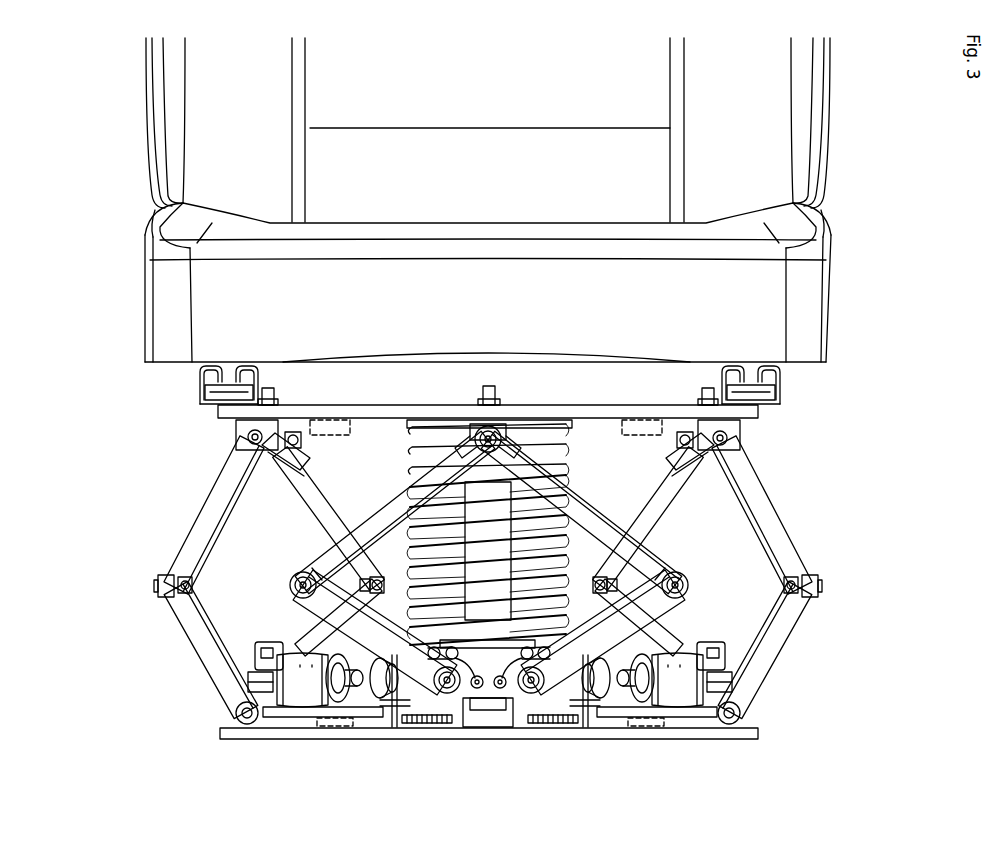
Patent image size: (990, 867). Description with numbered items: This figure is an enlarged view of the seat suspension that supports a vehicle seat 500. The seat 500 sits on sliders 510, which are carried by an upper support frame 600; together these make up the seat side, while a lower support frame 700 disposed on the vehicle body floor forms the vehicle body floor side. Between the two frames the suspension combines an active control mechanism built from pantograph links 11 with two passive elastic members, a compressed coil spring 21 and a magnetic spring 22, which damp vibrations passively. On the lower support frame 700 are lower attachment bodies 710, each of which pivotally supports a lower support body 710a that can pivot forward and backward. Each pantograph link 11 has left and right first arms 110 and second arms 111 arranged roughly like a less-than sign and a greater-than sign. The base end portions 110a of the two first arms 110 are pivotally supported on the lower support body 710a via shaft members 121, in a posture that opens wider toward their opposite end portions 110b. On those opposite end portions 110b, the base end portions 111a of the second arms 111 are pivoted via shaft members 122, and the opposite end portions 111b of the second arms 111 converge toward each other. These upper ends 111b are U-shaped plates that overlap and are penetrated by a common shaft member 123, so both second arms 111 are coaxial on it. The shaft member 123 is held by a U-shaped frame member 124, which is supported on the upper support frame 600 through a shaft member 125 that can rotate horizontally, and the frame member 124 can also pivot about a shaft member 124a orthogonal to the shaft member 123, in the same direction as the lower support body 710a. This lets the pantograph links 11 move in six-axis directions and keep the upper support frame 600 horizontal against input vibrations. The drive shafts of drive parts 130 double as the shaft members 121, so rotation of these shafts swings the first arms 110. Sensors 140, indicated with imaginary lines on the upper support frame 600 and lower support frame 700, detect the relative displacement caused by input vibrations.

The seat 500 is at (832, 90).
The sliders 510 is at (197, 392).
The upper support frame 600 is at (610, 410).
The lower support frame 700 is at (754, 733).
The lower attachment body 710 is at (277, 718).
The lower support body 710a is at (488, 700).
The pantograph link 11 is at (208, 492).
The compressed coil spring 21 is at (420, 448).
The magnetic spring 22 is at (500, 561).
The first arm 110 is at (307, 620).
The base end portion of first arm 110a is at (400, 723).
The opposite end portion of first arm 110b is at (292, 604).
The second arm 111 is at (578, 490).
The base end portion of second arm 111a is at (310, 560).
The opposite end portion of second arm 111b is at (455, 428).
The shaft member 121 is at (440, 728).
The shaft member 122 is at (290, 582).
The shaft member 123 is at (478, 430).
The U-shaped frame member 124 is at (502, 430).
The shaft member 124a is at (743, 445).
The shaft member 125 is at (483, 392).
The drive part 130 is at (312, 700).
The sensor 140 is at (327, 427).